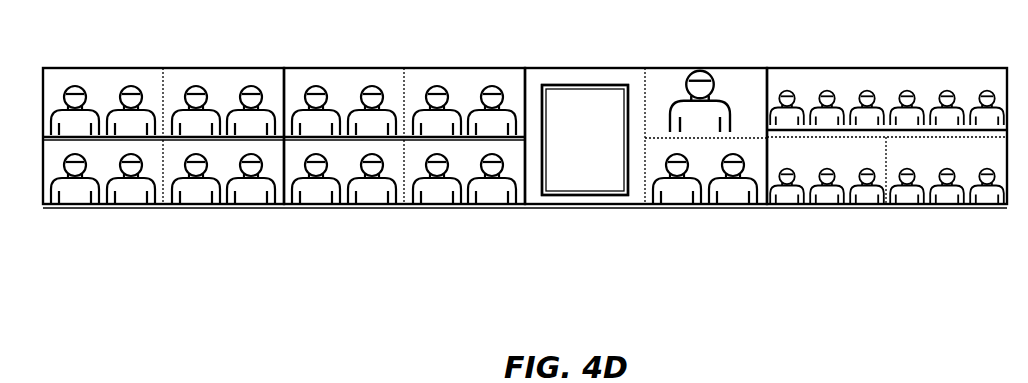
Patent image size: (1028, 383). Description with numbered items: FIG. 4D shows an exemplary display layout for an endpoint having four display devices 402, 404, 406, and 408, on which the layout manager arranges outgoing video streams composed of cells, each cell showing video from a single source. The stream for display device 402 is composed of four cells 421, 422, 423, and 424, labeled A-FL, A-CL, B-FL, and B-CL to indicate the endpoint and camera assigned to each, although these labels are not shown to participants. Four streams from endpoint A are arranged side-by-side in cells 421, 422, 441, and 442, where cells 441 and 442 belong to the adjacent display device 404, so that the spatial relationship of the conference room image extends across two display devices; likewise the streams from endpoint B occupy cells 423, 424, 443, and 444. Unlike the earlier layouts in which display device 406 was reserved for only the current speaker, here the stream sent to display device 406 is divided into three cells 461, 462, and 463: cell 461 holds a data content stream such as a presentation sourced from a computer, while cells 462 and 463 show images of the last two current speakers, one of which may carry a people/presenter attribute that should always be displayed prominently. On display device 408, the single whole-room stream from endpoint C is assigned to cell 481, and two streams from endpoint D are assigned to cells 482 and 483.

The display device 402 is at (283, 213).
The display device 404 is at (524, 213).
The display device 406 is at (766, 213).
The display device 408 is at (768, 213).
The cell 421 is at (146, 60).
The cell 422 is at (268, 60).
The cell 423 is at (110, 218).
The cell 424 is at (228, 218).
The cell 441 is at (386, 60).
The cell 442 is at (507, 60).
The cell 443 is at (348, 218).
The cell 444 is at (470, 218).
The cell 461 is at (629, 60).
The cell 462 is at (751, 60).
The cell 463 is at (711, 218).
The cell 481 is at (963, 58).
The cell 482 is at (831, 218).
The cell 483 is at (951, 218).